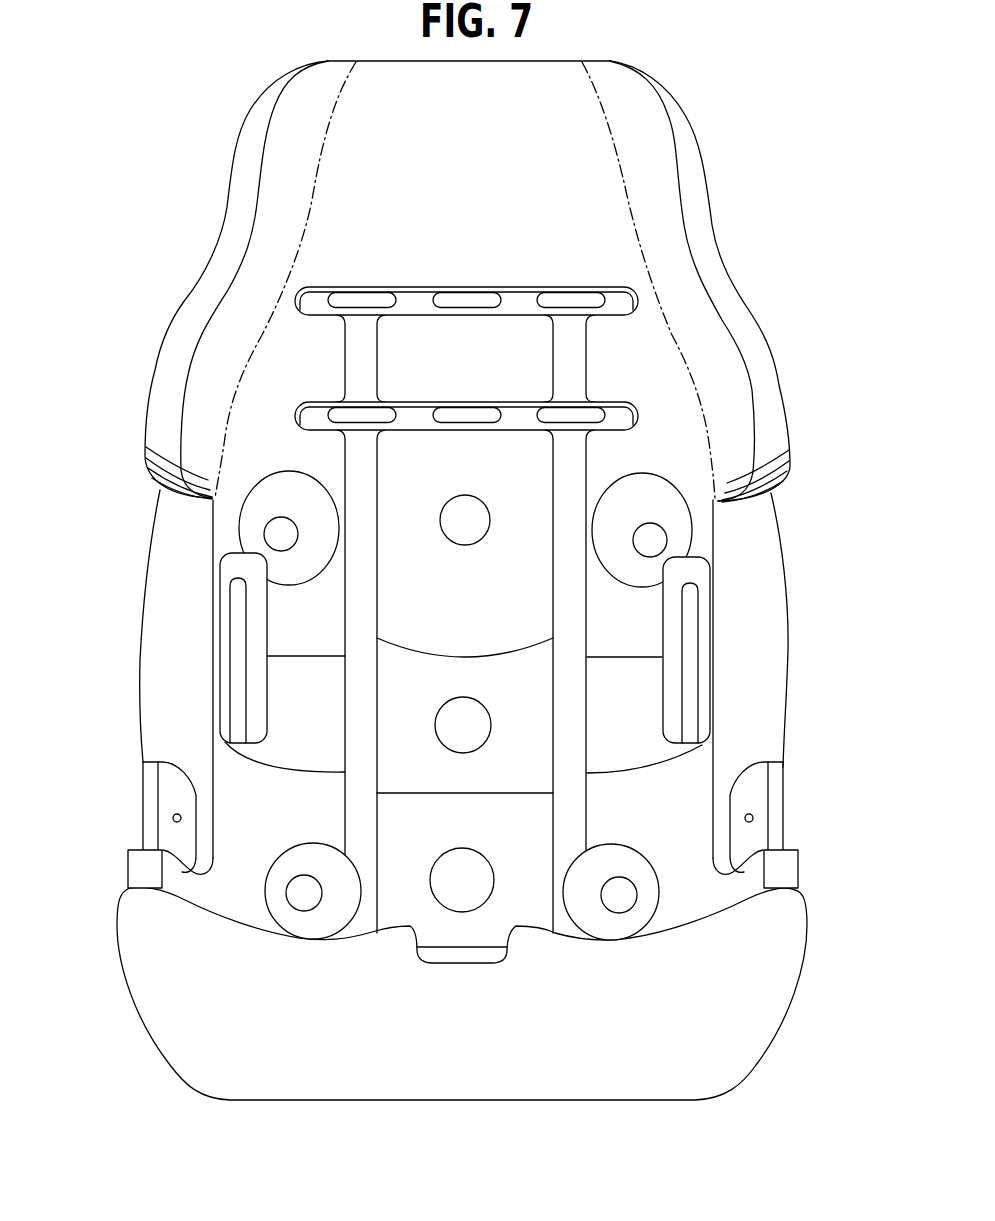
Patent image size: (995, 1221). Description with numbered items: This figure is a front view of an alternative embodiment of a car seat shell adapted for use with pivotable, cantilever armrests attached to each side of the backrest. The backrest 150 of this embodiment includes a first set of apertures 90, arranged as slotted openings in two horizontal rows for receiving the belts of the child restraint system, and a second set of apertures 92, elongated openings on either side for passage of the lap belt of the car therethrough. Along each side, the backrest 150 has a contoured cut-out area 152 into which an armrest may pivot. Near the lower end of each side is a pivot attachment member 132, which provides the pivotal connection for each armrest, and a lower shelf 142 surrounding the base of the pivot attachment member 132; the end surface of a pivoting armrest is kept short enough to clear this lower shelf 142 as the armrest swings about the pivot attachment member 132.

The backrest 150 is at (553, 130).
The first set of apertures 90 is at (382, 297).
The contoured cut-out areas 152 is at (172, 563).
The second set of apertures 92 is at (239, 650).
The pivot attachment member 132 is at (148, 797).
The lower shelf 142 is at (135, 847).